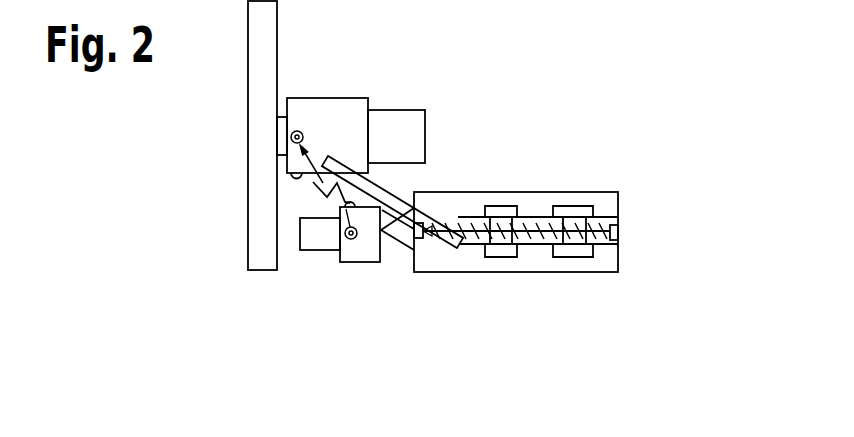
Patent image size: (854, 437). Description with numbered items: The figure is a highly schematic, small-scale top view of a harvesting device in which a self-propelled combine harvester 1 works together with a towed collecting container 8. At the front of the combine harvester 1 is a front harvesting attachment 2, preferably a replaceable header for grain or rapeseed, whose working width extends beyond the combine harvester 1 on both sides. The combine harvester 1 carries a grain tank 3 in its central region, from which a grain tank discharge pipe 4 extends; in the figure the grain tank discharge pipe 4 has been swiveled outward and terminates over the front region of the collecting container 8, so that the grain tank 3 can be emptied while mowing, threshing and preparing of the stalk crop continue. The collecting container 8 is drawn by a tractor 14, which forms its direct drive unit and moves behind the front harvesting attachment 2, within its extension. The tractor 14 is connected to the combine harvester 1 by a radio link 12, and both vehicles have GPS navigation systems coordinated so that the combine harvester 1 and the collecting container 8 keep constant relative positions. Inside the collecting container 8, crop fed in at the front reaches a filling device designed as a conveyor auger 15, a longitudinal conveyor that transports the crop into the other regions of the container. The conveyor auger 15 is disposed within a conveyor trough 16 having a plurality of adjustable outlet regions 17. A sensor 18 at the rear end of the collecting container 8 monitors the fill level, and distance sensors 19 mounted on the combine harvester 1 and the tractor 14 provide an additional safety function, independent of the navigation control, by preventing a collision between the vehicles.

The self-propelled combine harvester 1 is at (362, 92).
The front harvesting attachment 2 is at (263, 108).
The grain tank 3 is at (325, 113).
The grain tank discharge pipe 4 is at (393, 197).
The collecting container 8 is at (573, 184).
The radio link 12 is at (313, 193).
The tractor 14 is at (320, 240).
The conveyor auger 15 is at (618, 206).
The conveyor trough 16 is at (538, 206).
The adjustable outlet regions 17 is at (503, 205).
The sensor 18 is at (618, 232).
The distance sensors 19 is at (290, 182).